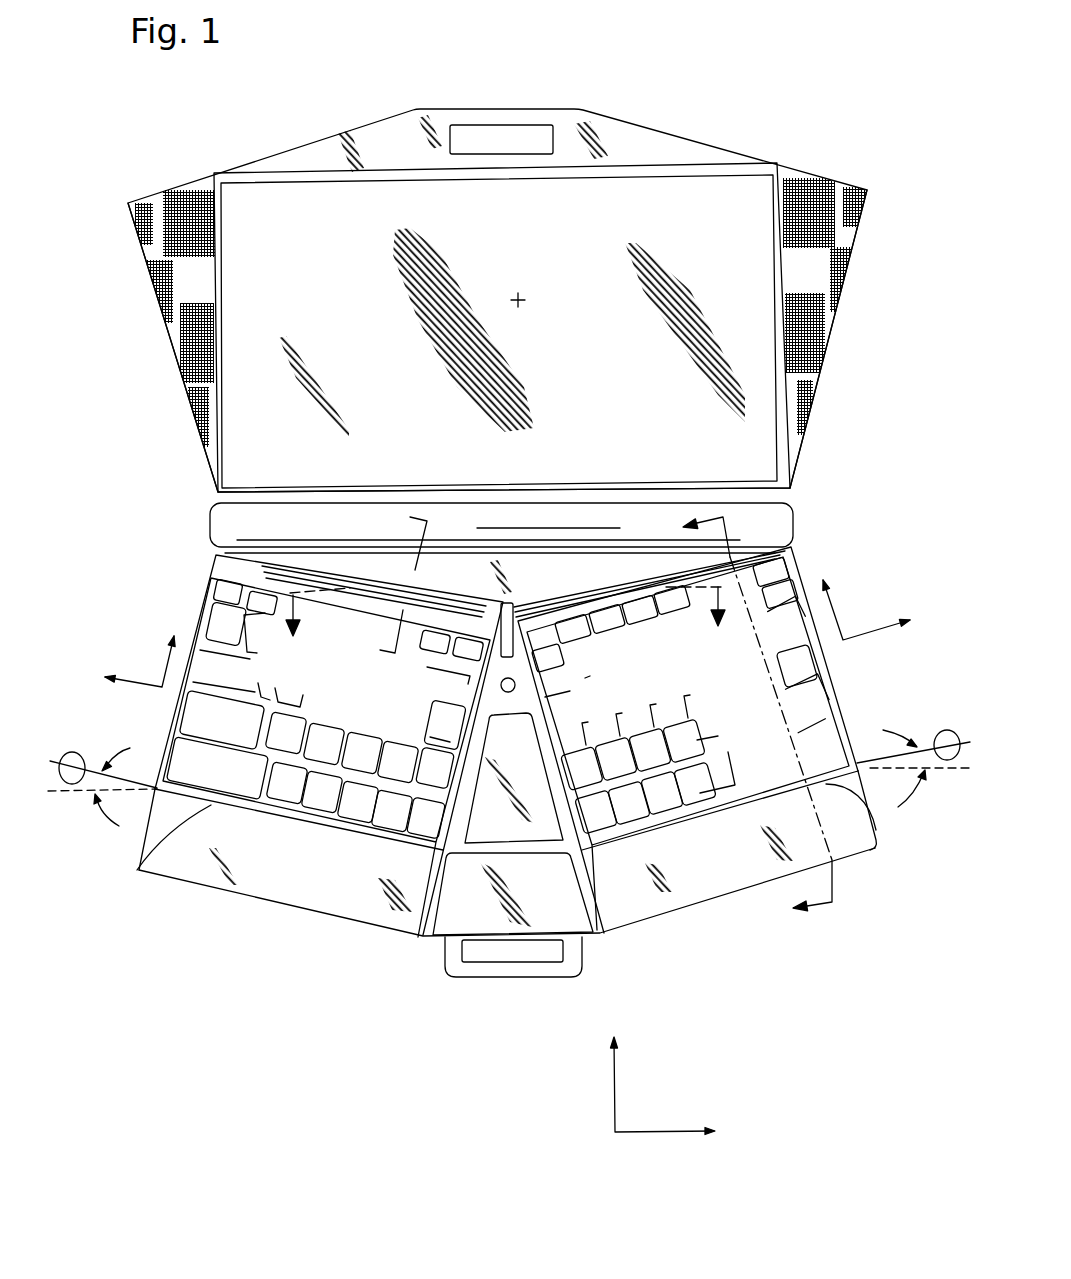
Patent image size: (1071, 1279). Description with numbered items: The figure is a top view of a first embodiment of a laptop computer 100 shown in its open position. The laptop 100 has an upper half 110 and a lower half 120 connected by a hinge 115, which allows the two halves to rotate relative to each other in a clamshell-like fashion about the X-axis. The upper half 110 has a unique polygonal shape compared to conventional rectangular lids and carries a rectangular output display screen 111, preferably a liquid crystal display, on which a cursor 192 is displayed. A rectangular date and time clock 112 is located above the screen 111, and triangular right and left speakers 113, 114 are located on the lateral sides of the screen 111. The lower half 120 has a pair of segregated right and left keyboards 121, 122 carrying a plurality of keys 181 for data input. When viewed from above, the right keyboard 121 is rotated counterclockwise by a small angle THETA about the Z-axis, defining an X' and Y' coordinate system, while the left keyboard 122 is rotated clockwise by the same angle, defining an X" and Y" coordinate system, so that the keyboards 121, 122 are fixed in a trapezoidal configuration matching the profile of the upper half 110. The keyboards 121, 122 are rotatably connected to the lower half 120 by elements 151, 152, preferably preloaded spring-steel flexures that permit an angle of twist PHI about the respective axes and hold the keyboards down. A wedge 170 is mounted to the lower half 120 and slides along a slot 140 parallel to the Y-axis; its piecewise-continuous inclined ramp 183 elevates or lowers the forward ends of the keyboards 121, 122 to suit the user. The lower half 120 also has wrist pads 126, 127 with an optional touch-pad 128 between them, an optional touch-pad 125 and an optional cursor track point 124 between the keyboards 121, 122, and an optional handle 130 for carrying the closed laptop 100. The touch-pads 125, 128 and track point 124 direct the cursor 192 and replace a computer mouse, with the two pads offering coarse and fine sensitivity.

The laptop computer 100 is at (676, 73).
The upper half 110 is at (563, 122).
The output display screen 111 is at (704, 448).
The date and time clock 112 is at (470, 140).
The right speaker 113 is at (843, 238).
The left speaker 114 is at (179, 350).
The hinge 115 is at (771, 509).
The lower half 120 is at (644, 922).
The right keyboard 121 is at (842, 710).
The left keyboard 122 is at (207, 587).
The cursor track point 124 is at (500, 685).
The touch-pad 125 is at (483, 823).
The wrist pad 126 is at (298, 887).
The wrist pad 127 is at (845, 835).
The touch-pad 128 is at (452, 920).
The handle 130 is at (545, 975).
The slot 140 is at (562, 660).
The element 151 is at (880, 833).
The element 152 is at (137, 870).
The wedge 170 is at (339, 555).
The keys 181 is at (212, 719).
The inclined ramp 183 is at (538, 597).
The cursor 192 is at (544, 303).